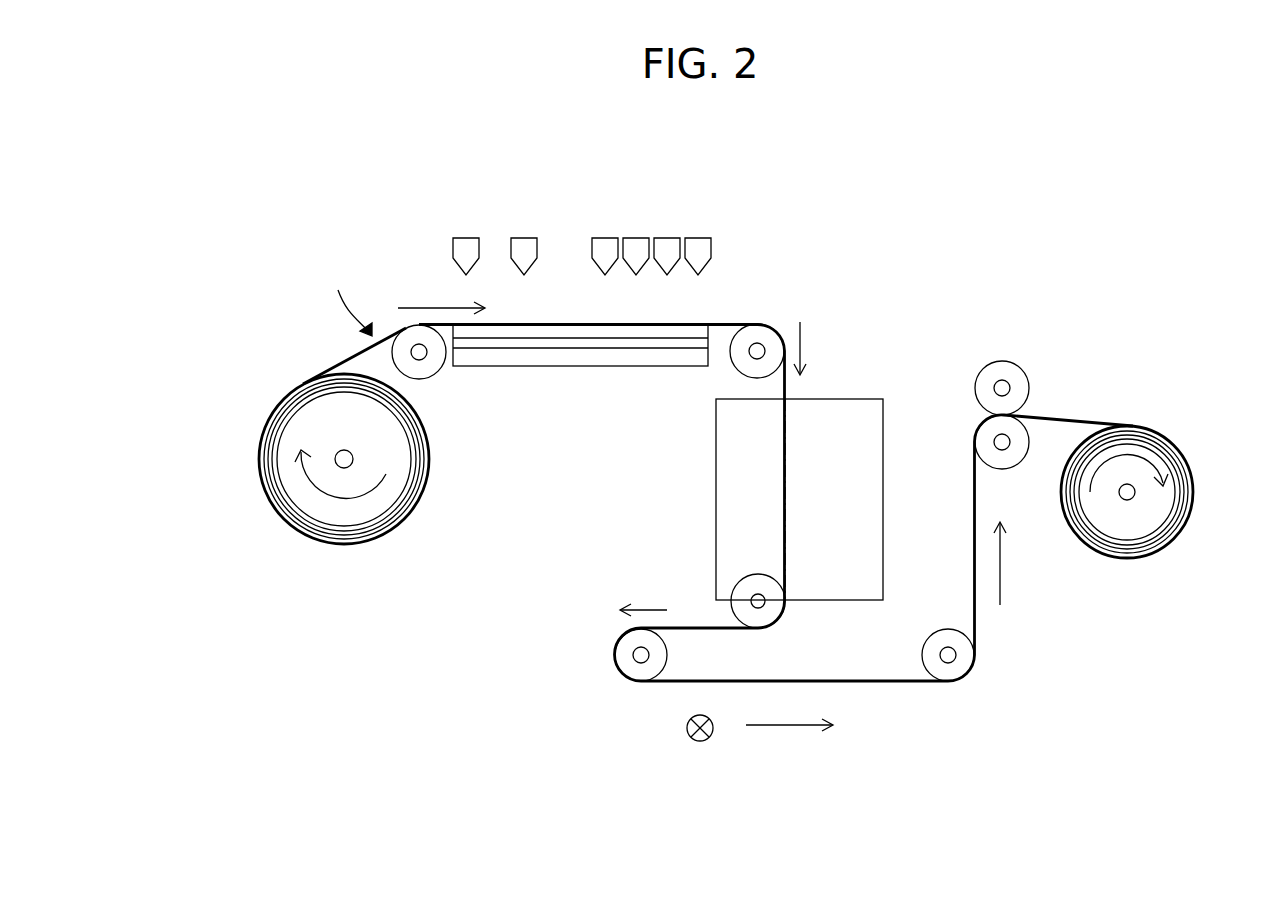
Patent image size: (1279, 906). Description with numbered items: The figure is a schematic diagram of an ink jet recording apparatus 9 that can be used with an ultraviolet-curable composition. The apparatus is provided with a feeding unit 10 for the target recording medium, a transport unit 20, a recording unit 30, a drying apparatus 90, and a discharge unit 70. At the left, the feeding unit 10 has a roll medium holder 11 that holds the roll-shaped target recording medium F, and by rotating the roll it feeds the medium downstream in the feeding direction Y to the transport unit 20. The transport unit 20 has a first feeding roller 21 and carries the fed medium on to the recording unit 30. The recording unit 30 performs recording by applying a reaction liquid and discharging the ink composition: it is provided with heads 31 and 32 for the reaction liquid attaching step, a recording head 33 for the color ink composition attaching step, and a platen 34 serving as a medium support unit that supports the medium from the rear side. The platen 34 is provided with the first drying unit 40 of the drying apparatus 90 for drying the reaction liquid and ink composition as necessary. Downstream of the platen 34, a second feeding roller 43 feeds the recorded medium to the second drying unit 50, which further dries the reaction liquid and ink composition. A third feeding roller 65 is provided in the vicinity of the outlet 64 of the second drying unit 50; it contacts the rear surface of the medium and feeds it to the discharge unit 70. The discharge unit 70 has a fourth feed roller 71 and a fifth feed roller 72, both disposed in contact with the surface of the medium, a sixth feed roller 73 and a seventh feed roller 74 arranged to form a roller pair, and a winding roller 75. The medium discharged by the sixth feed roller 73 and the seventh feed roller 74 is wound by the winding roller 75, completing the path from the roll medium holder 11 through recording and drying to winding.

The ink jet recording apparatus 9 is at (330, 203).
The feeding unit 10 is at (343, 572).
The roll medium holder 11 is at (285, 437).
The transport unit 20 is at (588, 476).
The first feeding roller 21 is at (430, 362).
The recording unit 30 is at (450, 170).
The head 31 is at (466, 244).
The head 32 is at (523, 244).
The recording head 33 is at (712, 230).
The platen 34 is at (617, 330).
The first drying unit 40 is at (554, 360).
The second feeding roller 43 is at (740, 365).
The second drying unit 50 is at (738, 511).
The outlet 64 is at (790, 602).
The third feeding roller 65 is at (742, 596).
The discharge unit 70 is at (1037, 672).
The fourth feed roller 71 is at (668, 655).
The fifth feed roller 72 is at (922, 655).
The sixth feed roller 73 is at (1008, 462).
The seventh feed roller 74 is at (1004, 362).
The winding roller 75 is at (1168, 500).
The drying apparatus 90 is at (563, 432).